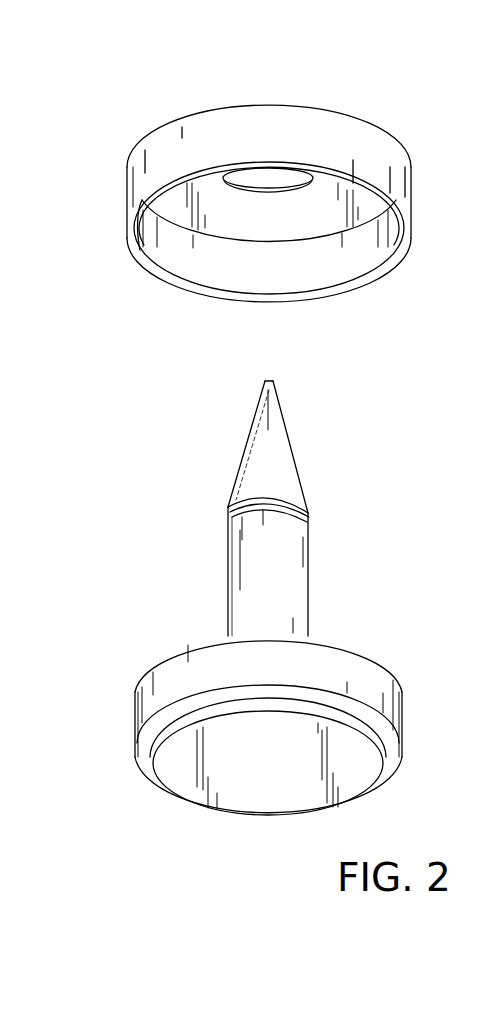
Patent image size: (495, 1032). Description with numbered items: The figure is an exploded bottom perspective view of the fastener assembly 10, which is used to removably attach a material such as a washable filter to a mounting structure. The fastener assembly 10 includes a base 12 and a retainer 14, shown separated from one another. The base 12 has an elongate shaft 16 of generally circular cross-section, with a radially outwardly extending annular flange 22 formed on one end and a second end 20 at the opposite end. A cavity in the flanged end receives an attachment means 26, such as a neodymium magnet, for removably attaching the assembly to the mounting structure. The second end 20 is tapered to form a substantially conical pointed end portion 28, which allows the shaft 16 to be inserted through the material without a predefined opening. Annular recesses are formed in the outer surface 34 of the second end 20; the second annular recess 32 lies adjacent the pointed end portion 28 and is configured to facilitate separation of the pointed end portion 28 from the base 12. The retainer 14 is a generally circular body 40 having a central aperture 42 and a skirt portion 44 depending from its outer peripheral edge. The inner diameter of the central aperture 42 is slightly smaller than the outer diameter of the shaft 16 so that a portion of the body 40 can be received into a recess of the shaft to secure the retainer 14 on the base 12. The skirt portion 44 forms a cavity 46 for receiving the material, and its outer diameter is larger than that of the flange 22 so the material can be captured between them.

The fastener assembly 10 is at (96, 136).
The base 12 is at (246, 442).
The retainer 14 is at (151, 134).
The elongate shaft 16 is at (228, 573).
The second end 20 is at (268, 380).
The annular flange 22 is at (135, 731).
The attachment means 26 is at (252, 802).
The pointed end portion 28 is at (320, 375).
The second annular recess 32 is at (231, 513).
The outer surface 34 is at (228, 617).
The body 40 is at (218, 114).
The central aperture 42 is at (226, 180).
The skirt portion 44 is at (410, 205).
The cavity 46 is at (178, 207).